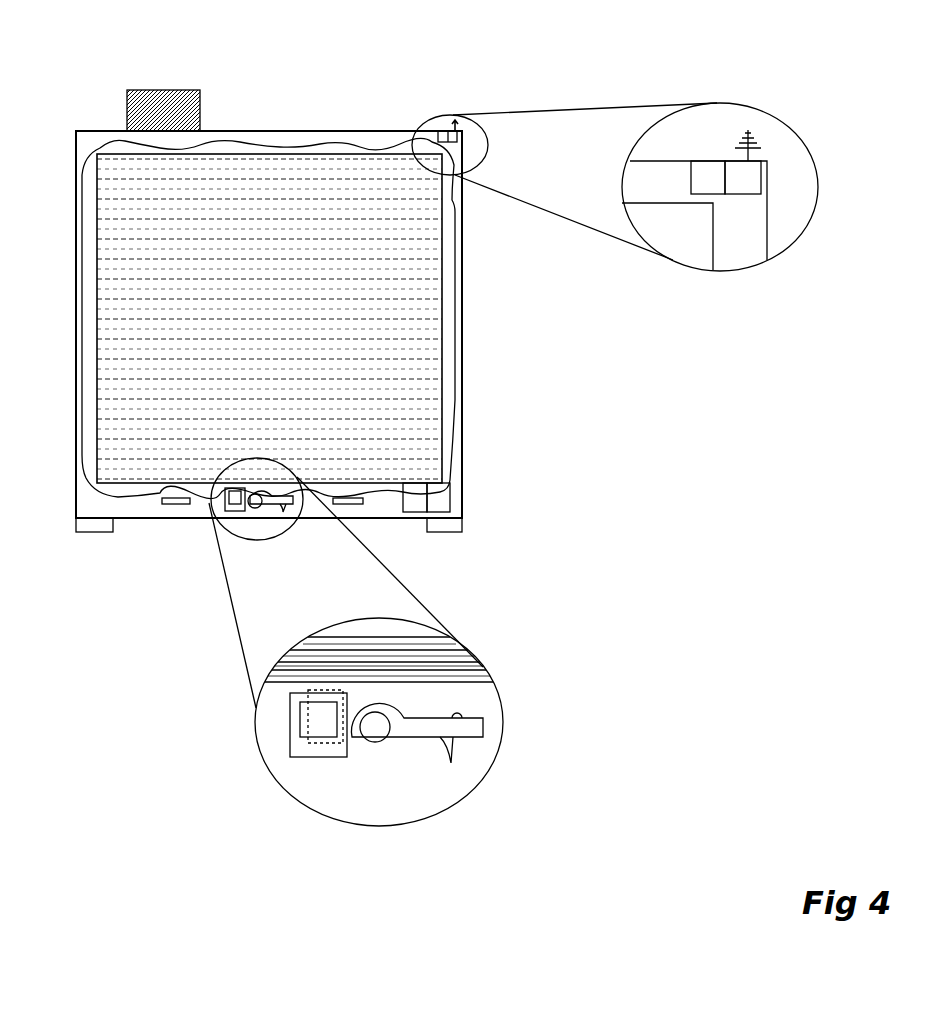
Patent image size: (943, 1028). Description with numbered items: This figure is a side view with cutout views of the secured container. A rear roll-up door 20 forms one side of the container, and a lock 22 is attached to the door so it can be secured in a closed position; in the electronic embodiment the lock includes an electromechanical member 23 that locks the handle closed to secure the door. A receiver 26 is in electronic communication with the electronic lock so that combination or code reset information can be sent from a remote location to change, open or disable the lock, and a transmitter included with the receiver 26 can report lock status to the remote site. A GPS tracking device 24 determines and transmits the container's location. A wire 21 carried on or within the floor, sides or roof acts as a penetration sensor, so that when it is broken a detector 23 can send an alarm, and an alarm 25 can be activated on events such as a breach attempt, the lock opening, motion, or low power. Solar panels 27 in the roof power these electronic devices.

The rear roll-up door 20 is at (118, 232).
The wire 21 is at (460, 413).
The lock 22 is at (215, 537).
The electromechanical member 23 is at (443, 503).
The GPS tracking device 24 is at (748, 182).
The alarm 25 is at (415, 503).
The receiver 26 is at (707, 192).
The solar panels 27 is at (172, 90).